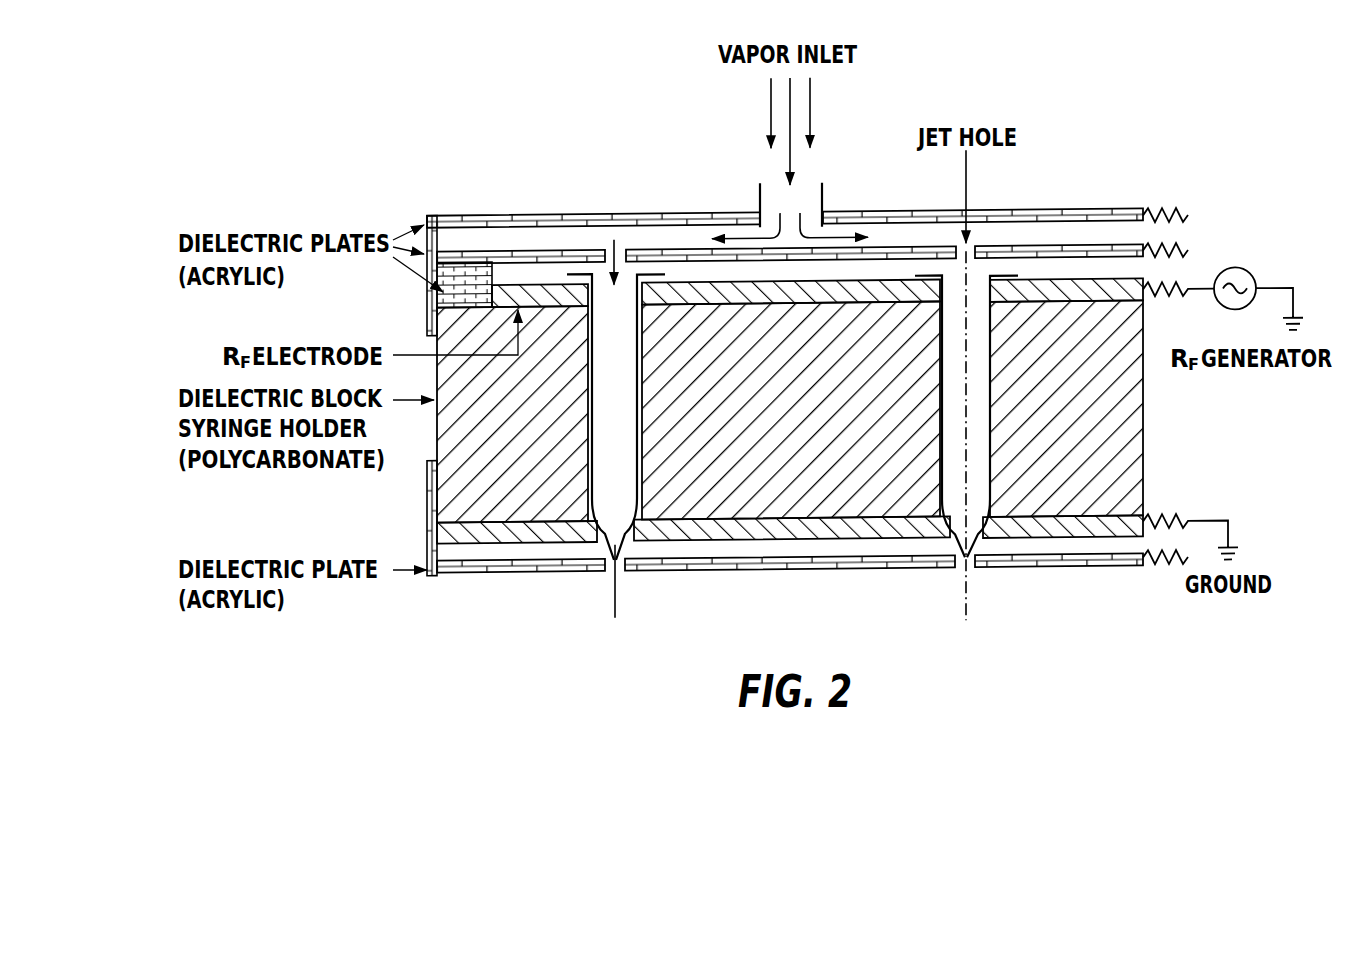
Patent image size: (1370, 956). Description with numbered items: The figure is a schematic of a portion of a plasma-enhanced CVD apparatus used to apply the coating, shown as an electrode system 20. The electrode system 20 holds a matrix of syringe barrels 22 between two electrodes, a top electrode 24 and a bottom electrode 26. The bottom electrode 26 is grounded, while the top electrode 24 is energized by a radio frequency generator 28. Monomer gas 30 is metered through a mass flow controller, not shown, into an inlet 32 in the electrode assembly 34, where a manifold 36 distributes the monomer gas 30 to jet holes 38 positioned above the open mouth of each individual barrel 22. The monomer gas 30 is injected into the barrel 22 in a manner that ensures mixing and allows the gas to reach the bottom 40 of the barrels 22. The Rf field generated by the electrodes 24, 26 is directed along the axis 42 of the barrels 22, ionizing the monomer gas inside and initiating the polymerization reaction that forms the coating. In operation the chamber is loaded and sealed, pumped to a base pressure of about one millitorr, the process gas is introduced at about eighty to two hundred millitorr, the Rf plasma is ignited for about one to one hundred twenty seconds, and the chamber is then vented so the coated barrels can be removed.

The electrode system 20 is at (1203, 144).
The syringe barrel 22 is at (592, 460).
The top electrode 24 is at (543, 314).
The bottom electrode 26 is at (507, 546).
The Rf generator 28 is at (1237, 270).
The monomer gas 30 is at (812, 103).
The inlet 32 is at (760, 188).
The electrode assembly 34 is at (685, 282).
The manifold 36 is at (510, 246).
The jet hole 38 is at (972, 250).
The bottom of the barrel 40 is at (957, 552).
The axis of the barrel 42 is at (968, 455).